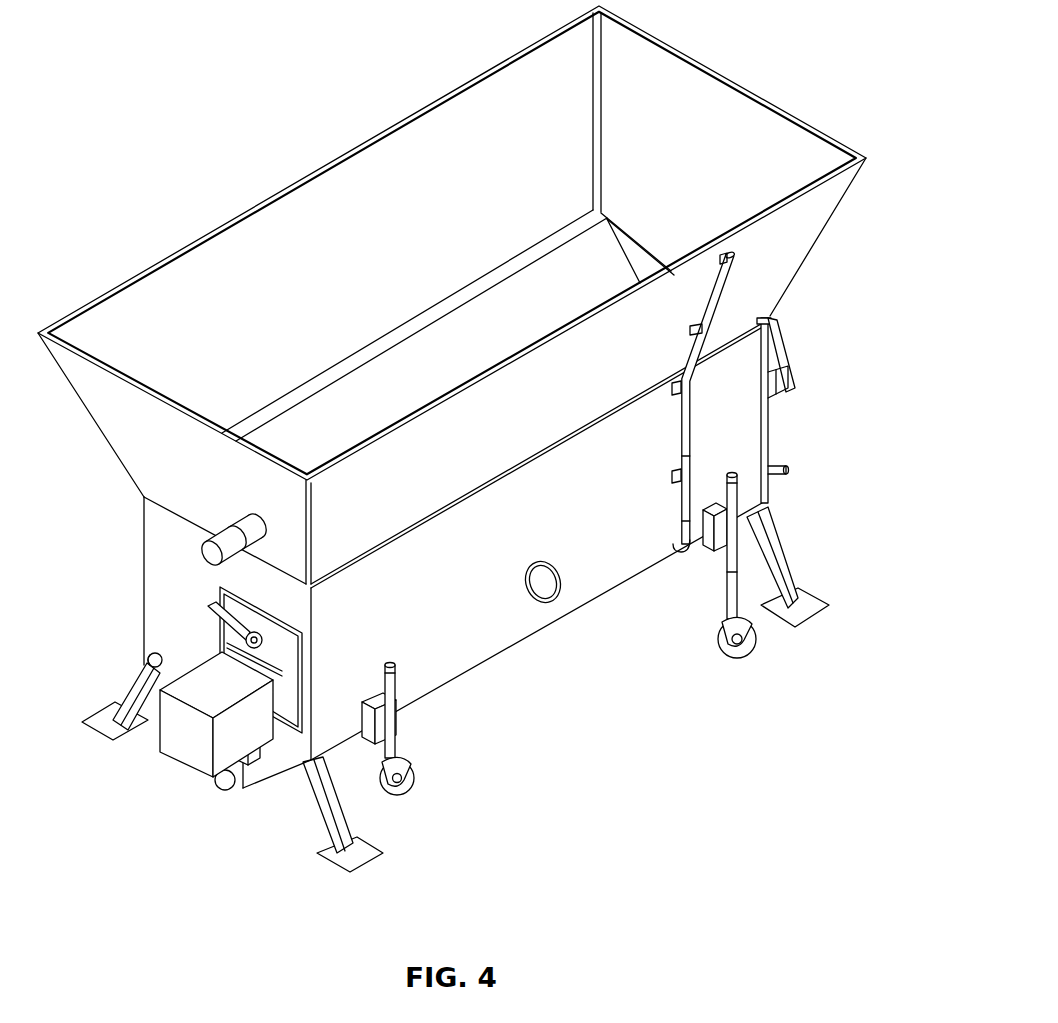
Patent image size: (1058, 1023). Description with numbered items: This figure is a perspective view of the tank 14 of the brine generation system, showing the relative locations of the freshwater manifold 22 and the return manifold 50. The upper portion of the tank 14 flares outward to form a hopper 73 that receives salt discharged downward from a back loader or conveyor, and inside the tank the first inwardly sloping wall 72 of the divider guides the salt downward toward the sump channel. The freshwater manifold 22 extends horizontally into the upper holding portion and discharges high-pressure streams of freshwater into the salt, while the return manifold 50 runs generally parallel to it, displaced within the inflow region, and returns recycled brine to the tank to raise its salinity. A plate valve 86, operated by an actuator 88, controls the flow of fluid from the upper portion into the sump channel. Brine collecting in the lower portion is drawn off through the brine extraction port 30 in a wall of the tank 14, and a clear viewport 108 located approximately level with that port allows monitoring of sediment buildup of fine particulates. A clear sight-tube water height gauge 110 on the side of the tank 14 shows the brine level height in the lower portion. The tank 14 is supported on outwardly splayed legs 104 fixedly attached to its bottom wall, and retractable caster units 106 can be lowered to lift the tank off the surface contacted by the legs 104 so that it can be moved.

The tank 14 is at (196, 142).
The freshwater manifold 22 is at (222, 532).
The brine extraction port 30 is at (148, 652).
The return manifold 50 is at (259, 515).
The first inwardly sloping wall 72 is at (413, 347).
The hopper 73 is at (388, 156).
The plate valve 86 is at (192, 750).
The actuator 88 is at (218, 622).
The legs 104 is at (328, 822).
The retractable caster units 106 is at (398, 732).
The clear viewport 108 is at (544, 592).
The water height gauge 110 is at (690, 434).